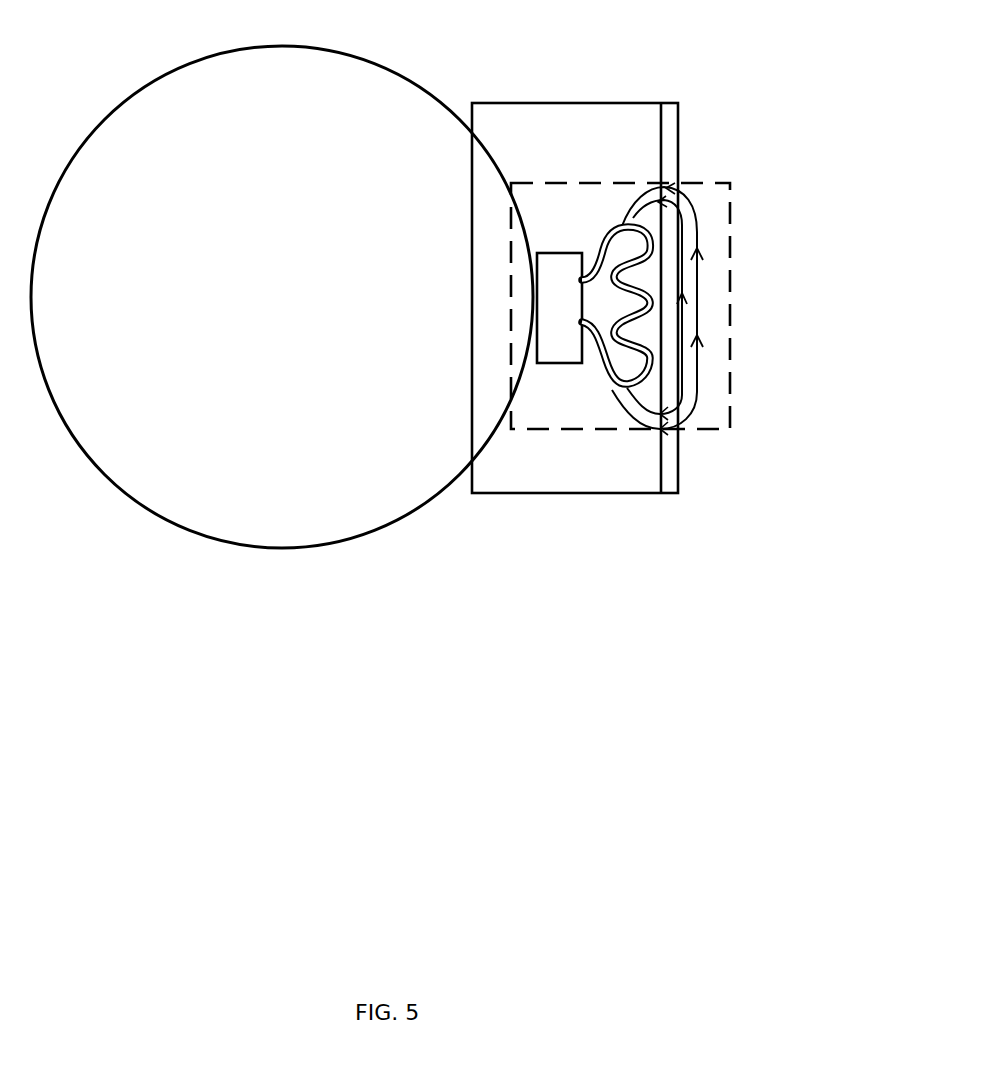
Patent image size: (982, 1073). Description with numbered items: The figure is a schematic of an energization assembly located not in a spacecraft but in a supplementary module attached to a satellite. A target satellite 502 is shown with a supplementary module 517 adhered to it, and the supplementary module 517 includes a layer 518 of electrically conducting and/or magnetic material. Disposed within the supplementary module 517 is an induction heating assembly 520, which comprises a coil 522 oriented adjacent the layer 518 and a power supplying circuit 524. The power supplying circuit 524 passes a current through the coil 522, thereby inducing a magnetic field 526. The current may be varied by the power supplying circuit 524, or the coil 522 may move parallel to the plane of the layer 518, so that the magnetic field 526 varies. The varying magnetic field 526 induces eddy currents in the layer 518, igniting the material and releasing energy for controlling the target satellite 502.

The target satellite 502 is at (303, 309).
The supplementary module 517 is at (554, 106).
The layer 518 is at (670, 106).
The induction heating assembly 520 is at (738, 186).
The coil 522 is at (612, 388).
The power supplying circuit 524 is at (553, 364).
The magnetic field 526 is at (699, 404).